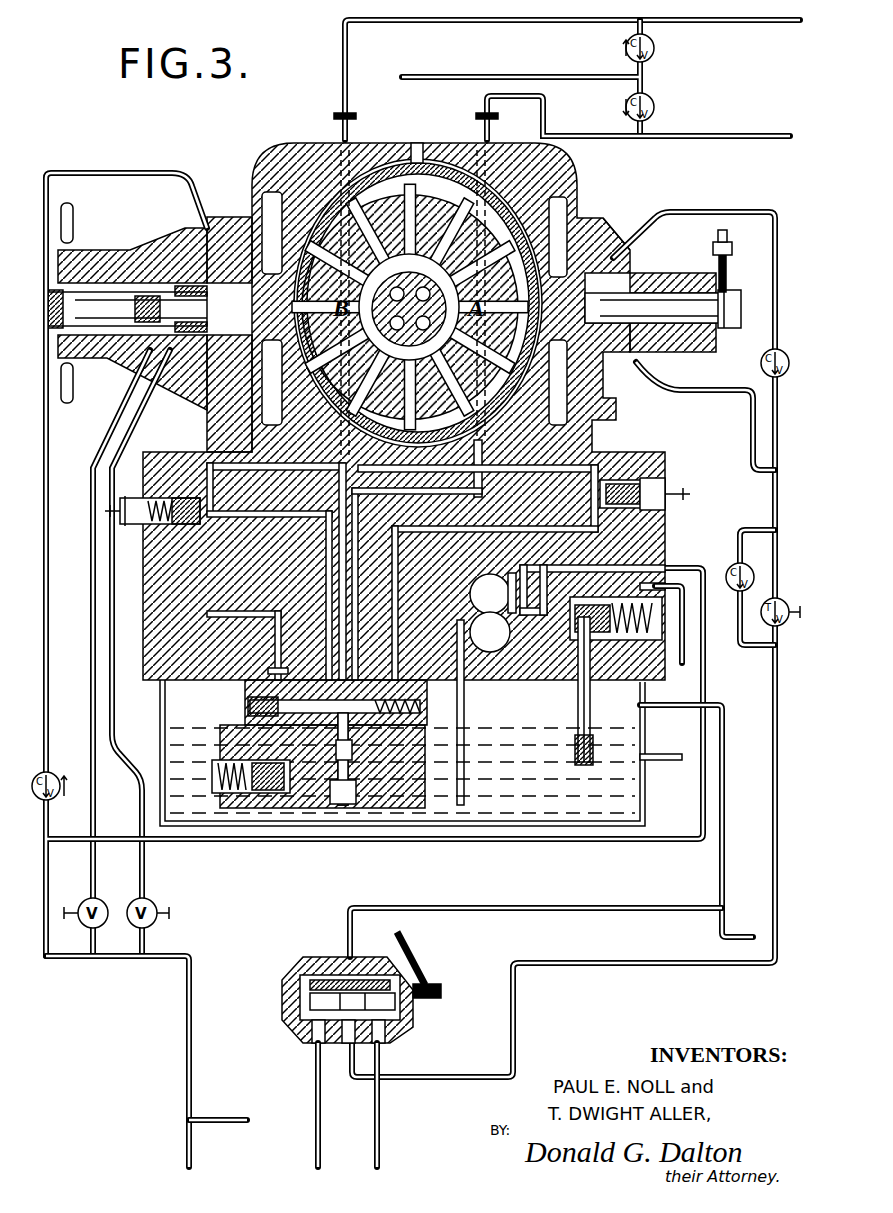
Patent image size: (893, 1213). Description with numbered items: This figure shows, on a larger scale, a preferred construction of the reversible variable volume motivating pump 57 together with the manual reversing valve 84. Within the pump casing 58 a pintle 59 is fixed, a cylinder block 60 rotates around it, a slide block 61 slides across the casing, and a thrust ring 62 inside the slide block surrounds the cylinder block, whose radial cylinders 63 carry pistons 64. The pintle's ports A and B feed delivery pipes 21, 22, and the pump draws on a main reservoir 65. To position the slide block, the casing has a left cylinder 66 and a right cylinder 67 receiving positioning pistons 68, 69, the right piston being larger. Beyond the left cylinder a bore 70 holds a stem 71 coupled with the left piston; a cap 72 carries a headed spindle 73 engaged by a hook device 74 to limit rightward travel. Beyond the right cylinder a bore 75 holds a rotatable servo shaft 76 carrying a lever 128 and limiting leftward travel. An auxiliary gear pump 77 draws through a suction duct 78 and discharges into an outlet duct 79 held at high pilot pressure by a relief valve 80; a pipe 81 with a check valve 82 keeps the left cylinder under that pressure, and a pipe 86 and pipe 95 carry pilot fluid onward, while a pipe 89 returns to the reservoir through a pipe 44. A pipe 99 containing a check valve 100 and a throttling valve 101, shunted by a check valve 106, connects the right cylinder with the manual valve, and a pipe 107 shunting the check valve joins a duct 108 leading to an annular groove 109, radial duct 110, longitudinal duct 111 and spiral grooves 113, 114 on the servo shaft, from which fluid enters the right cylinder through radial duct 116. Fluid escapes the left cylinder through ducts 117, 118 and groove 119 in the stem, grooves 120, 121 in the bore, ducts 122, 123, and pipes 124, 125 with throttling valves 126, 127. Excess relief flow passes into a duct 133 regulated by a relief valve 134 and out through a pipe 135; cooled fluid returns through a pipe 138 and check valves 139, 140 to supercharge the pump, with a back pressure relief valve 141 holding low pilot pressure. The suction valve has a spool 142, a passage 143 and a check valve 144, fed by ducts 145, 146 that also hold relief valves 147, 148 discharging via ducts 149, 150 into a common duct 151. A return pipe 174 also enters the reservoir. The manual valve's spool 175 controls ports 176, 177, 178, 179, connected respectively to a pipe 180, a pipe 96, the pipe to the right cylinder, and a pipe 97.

The delivery pipe 21 is at (766, 134).
The delivery pipe 22 is at (790, 21).
The pipe 44 is at (724, 707).
The motivating pump 57 is at (386, 145).
The pump casing 58 is at (292, 160).
The pintle 59 is at (413, 294).
The cylinder block 60 is at (366, 148).
The slide block 61 is at (444, 150).
The thrust ring 62 is at (417, 148).
The radial cylinders 63 is at (413, 328).
The pistons 64 is at (484, 165).
The main reservoir 65 is at (160, 708).
The cylinder 66 is at (245, 215).
The cylinder 67 is at (577, 195).
The positioning piston 68 is at (274, 213).
The positioning piston 69 is at (604, 226).
The bore 70 is at (100, 250).
The stem 71 is at (125, 292).
The cap 72 is at (68, 210).
The spindle 73 is at (70, 365).
The hook device 74 is at (80, 292).
The bore 75 is at (722, 270).
The servo shaft 76 is at (730, 302).
The auxiliary gear pump 77 is at (493, 612).
The suction duct 78 is at (465, 678).
The outlet duct 79 is at (595, 566).
The relief valve 80 is at (586, 676).
The pipe 81 is at (104, 173).
The check valve 82 is at (50, 772).
The manual reversing valve 84 is at (415, 975).
The pipe 86 is at (238, 1120).
The pipe 89 is at (753, 947).
The pipe 95 is at (191, 1150).
The pipe 96 is at (321, 1103).
The pipe 97 is at (382, 1098).
The pipe 99 is at (735, 211).
The check valve 100 is at (780, 350).
The adjustable throttling valve 101 is at (778, 606).
The check valve 106 is at (742, 560).
The pipe 107 is at (750, 432).
The duct 108 is at (655, 352).
The annular groove 109 is at (702, 352).
The radial duct 110 is at (630, 300).
The longitudinal duct 111 is at (640, 262).
The spiral groove 113 is at (632, 268).
The spiral groove 114 is at (612, 392).
The radial duct 116 is at (628, 248).
The longitudinal duct 117 is at (215, 255).
The radial duct 118 is at (180, 286).
The annular groove 119 is at (205, 345).
The annular groove 120 is at (205, 330).
The annular groove 121 is at (98, 312).
The duct 122 is at (172, 376).
The duct 123 is at (150, 372).
The pipe 124 is at (120, 445).
The pipe 125 is at (96, 445).
The adjustable throttling valve 126 is at (150, 902).
The adjustable throttling valve 127 is at (82, 902).
The lever 128 is at (728, 252).
The duct 133 is at (642, 600).
The relief valve 134 is at (576, 745).
The pipe 135 is at (666, 583).
The pipe 138 is at (548, 79).
The check valve 139 is at (655, 106).
The check valve 140 is at (655, 48).
The back pressure relief valve 141 is at (250, 800).
The valve spool 142 is at (358, 722).
The passage 143 is at (350, 765).
The check valve 144 is at (348, 810).
The duct 145 is at (440, 531).
The duct 146 is at (228, 608).
The relief valve 147 is at (633, 480).
The relief valve 148 is at (140, 500).
The duct 149 is at (388, 498).
The duct 150 is at (268, 485).
The common duct 151 is at (322, 668).
The return pipe 174 is at (682, 760).
The spool 175 is at (300, 1003).
The port 176 is at (335, 968).
The port 177 is at (295, 1040).
The port 178 is at (318, 1050).
The port 179 is at (398, 1032).
The pipe 180 is at (527, 912).